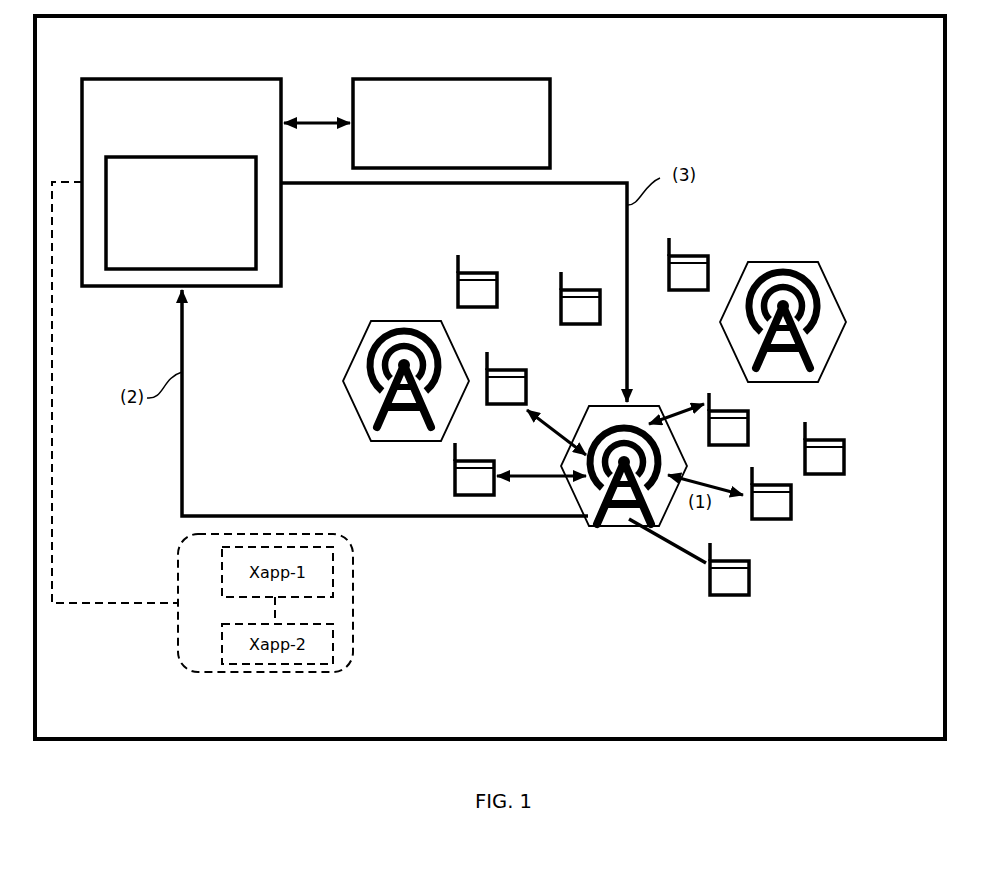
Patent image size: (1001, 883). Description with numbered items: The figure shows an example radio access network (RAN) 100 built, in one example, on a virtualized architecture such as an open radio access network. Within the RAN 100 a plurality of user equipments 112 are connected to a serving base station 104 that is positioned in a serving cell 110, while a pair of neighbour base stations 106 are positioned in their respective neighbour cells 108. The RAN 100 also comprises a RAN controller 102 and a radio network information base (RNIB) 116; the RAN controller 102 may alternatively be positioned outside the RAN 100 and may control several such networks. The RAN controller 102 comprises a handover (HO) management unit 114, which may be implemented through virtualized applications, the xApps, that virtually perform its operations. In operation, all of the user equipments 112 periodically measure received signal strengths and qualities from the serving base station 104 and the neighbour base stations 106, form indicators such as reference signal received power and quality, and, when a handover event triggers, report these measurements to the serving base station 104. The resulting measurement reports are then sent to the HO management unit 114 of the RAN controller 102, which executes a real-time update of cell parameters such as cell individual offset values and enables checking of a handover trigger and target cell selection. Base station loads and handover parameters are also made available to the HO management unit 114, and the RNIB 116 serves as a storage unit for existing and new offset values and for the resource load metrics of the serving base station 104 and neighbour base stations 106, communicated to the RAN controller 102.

The radio access network (RAN) 100 is at (906, 57).
The RAN controller 102 is at (198, 141).
The serving base station 104 is at (620, 506).
The neighbour base station 106 is at (381, 336).
The neighbour cell 108 is at (357, 414).
The serving cell 110 is at (604, 406).
The user equipment (UE) 112 is at (456, 297).
The handover (HO) management unit 114 is at (197, 259).
The radio network information base (RNIB) 116 is at (467, 147).